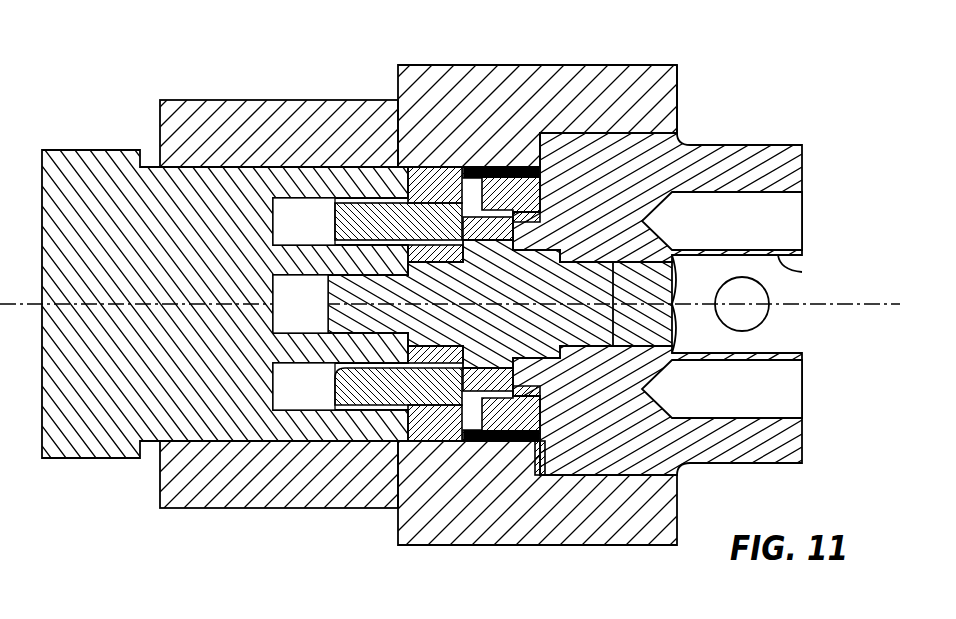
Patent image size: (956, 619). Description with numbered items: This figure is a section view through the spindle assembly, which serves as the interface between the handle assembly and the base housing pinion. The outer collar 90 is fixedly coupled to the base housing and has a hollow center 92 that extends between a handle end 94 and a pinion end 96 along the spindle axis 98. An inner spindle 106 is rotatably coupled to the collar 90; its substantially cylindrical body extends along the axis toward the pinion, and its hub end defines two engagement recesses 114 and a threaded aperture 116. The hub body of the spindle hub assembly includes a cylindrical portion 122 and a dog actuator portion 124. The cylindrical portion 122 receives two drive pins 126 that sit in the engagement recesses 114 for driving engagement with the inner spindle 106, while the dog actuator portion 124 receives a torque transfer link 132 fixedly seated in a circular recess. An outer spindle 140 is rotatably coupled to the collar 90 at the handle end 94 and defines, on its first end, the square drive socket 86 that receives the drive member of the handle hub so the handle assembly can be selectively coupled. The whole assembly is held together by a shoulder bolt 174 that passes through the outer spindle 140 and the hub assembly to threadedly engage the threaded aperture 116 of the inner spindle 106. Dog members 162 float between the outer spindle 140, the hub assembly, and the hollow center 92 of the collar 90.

The square drive socket 86 is at (803, 270).
The collar 90 is at (527, 85).
The hollow center 92 is at (232, 176).
The handle end 94 is at (678, 95).
The pinion end 96 is at (160, 122).
The spindle axis 98 is at (832, 302).
The inner spindle 106 is at (194, 294).
The engagement recesses 114 is at (293, 200).
The threaded aperture 116 is at (302, 328).
The cylindrical portion 122 is at (440, 425).
The dog actuator portion 124 is at (488, 400).
The drive pins 126 is at (370, 215).
The torque transfer link 132 is at (538, 350).
The outer spindle 140 is at (608, 172).
The dog members 162 is at (514, 185).
The shoulder bolt 174 is at (535, 298).